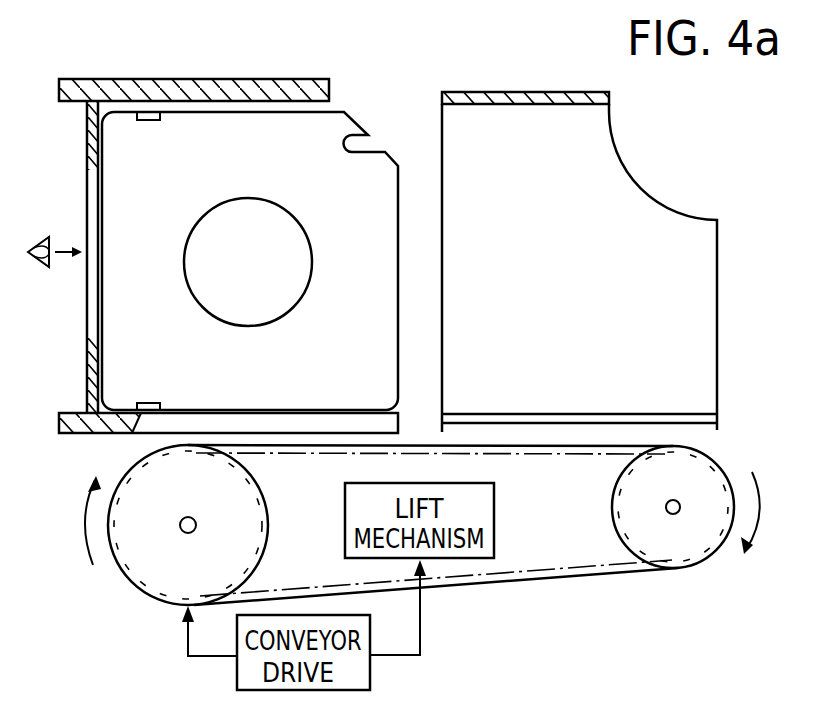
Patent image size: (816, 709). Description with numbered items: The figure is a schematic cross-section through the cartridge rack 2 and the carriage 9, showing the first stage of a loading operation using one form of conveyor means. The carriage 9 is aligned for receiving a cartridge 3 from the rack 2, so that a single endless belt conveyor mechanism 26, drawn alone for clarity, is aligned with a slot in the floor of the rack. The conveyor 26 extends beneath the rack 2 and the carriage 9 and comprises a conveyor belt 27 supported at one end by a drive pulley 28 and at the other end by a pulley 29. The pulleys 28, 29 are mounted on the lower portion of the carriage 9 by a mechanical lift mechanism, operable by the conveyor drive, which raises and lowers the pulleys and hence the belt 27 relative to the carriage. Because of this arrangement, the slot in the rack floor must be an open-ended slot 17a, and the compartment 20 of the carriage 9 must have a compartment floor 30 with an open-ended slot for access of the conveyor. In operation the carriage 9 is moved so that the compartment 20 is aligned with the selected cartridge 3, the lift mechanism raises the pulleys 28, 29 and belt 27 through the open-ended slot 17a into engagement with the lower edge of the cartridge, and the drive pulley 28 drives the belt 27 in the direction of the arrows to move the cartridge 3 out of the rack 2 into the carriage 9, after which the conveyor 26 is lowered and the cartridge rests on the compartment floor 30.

The cartridge rack 2 is at (160, 79).
The cartridge 3 is at (163, 190).
The carriage 9 is at (563, 92).
The open-ended slot 17a is at (220, 423).
The compartment 20 is at (452, 122).
The endless belt conveyor mechanism 26 is at (128, 583).
The conveyor belt 27 is at (597, 574).
The drive pulley 28 is at (148, 488).
The pulley 29 is at (686, 530).
The compartment floor 30 is at (704, 418).